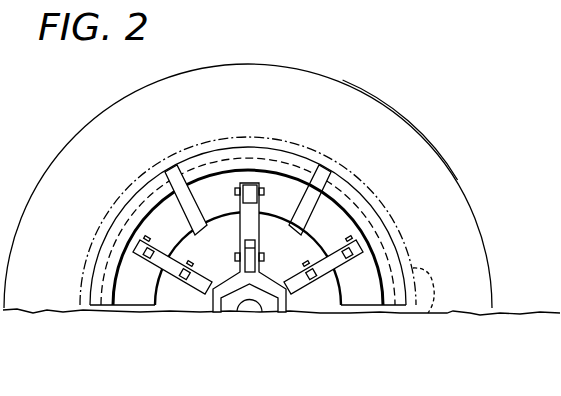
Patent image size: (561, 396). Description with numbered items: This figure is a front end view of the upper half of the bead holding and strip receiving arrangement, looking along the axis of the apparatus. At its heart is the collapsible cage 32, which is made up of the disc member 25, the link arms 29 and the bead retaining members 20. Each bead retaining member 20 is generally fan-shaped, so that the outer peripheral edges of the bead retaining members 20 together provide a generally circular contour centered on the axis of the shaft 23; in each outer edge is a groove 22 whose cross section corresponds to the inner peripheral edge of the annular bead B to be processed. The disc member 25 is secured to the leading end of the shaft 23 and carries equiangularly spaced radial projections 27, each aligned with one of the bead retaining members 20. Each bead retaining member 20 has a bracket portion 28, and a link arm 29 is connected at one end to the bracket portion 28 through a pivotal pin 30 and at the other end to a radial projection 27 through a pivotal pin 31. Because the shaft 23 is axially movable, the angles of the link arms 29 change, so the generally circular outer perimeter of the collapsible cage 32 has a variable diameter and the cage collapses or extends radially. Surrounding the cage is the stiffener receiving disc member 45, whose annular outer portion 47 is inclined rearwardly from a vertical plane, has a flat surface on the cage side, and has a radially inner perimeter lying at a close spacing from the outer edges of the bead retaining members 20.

The bead retaining member 20 is at (374, 308).
The groove 22 is at (435, 313).
The shaft 23 is at (244, 306).
The disc member 25 is at (292, 302).
The radial projection 27 is at (208, 299).
The bracket portion 28 is at (141, 261).
The link arm 29 is at (182, 242).
The pivotal pin 30 is at (127, 309).
The pivotal pin 31 is at (193, 304).
The collapsible cage 32 is at (86, 113).
The stiffener receiving disc member 45 is at (337, 318).
The annular outer portion 47 is at (393, 112).
The annular bead B is at (406, 242).